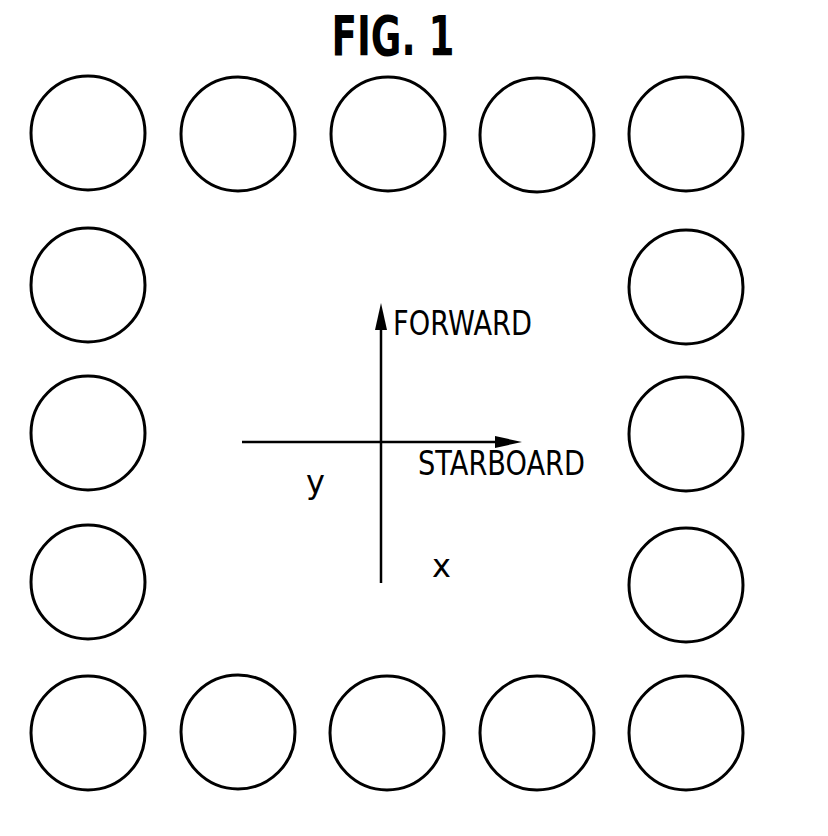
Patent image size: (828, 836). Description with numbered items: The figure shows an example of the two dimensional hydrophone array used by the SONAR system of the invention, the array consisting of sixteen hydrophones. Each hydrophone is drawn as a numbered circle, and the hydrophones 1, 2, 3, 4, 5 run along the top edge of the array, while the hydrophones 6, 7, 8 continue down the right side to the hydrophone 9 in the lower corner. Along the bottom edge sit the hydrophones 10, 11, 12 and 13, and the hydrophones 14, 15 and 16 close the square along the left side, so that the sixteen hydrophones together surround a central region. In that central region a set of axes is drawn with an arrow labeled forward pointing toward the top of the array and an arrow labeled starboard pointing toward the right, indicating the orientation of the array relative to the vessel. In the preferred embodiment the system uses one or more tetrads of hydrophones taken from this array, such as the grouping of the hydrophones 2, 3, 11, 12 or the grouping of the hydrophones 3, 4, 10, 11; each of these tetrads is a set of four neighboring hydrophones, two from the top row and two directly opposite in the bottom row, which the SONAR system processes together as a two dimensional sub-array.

The hydrophone 1 is at (88, 133).
The hydrophone 2 is at (238, 134).
The hydrophone 3 is at (388, 134).
The hydrophone 4 is at (537, 135).
The hydrophone 5 is at (686, 134).
The hydrophone 6 is at (686, 287).
The hydrophone 7 is at (686, 434).
The hydrophone 8 is at (686, 585).
The hydrophone 9 is at (686, 733).
The hydrophone 10 is at (537, 733).
The hydrophone 11 is at (387, 733).
The hydrophone 12 is at (238, 732).
The hydrophone 13 is at (88, 733).
The hydrophone 14 is at (88, 582).
The hydrophone 15 is at (88, 433).
The hydrophone 16 is at (88, 285).